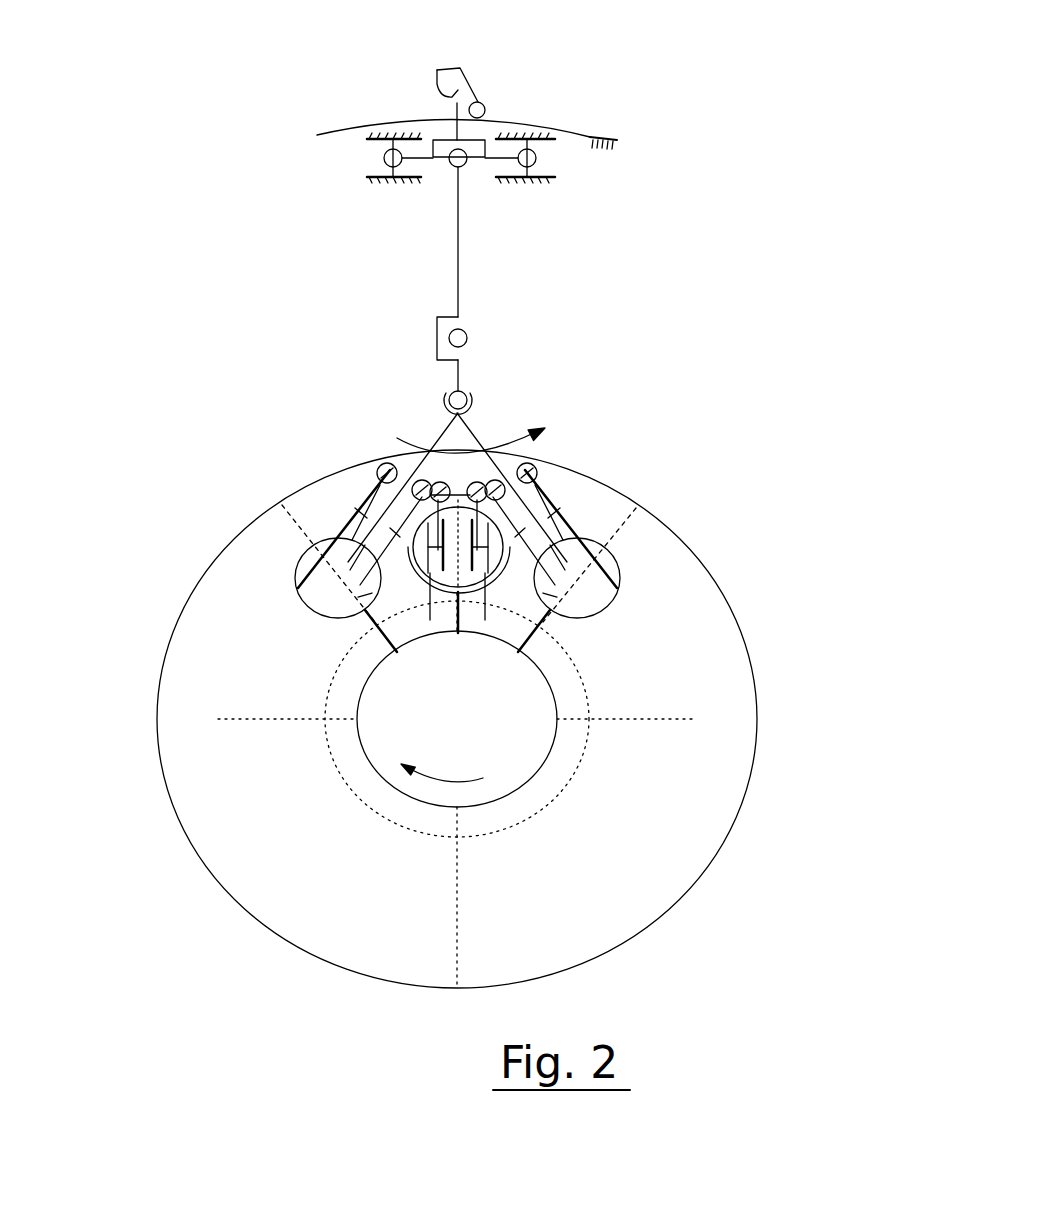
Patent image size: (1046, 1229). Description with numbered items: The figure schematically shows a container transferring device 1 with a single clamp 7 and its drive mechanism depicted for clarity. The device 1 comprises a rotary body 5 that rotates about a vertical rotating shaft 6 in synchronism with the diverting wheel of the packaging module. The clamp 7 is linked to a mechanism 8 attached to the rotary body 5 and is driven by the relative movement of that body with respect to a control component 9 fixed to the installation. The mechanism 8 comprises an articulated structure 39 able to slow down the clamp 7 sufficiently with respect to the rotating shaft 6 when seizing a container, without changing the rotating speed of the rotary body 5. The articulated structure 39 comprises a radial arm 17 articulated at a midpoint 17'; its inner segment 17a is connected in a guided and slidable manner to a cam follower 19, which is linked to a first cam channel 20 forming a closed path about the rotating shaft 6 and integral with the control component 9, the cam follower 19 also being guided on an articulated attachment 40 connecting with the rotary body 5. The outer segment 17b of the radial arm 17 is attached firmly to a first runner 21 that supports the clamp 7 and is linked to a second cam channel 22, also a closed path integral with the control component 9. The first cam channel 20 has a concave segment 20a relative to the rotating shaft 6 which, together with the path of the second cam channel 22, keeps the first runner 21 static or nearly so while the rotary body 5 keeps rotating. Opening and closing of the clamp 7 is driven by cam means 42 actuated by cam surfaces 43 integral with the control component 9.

The container transferring device 1 is at (143, 510).
The rotary body 5 is at (532, 772).
The rotating shaft 6 is at (450, 720).
The clamp 7 is at (460, 70).
The mechanism 8 is at (515, 308).
The control component 9 is at (716, 831).
The radial arm 17 is at (375, 341).
The midpoint 17' is at (523, 373).
The inner segment 17a is at (497, 468).
The outer segment 17b is at (458, 256).
The cam follower 19 is at (538, 470).
The first cam channel 20 is at (610, 488).
The concave segment 20a is at (318, 458).
The first runner 21 is at (423, 179).
The second cam channel 22 is at (346, 158).
The articulated structure 39 is at (400, 403).
The articulated attachment 40 is at (297, 593).
The cam means 42 is at (484, 102).
The cam surfaces 43 is at (567, 128).